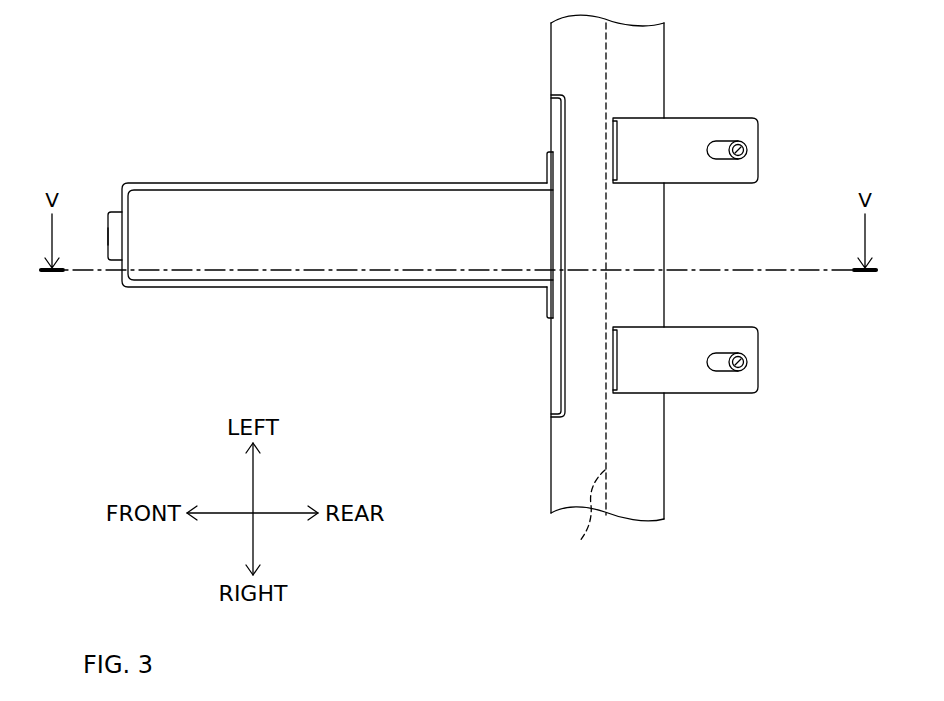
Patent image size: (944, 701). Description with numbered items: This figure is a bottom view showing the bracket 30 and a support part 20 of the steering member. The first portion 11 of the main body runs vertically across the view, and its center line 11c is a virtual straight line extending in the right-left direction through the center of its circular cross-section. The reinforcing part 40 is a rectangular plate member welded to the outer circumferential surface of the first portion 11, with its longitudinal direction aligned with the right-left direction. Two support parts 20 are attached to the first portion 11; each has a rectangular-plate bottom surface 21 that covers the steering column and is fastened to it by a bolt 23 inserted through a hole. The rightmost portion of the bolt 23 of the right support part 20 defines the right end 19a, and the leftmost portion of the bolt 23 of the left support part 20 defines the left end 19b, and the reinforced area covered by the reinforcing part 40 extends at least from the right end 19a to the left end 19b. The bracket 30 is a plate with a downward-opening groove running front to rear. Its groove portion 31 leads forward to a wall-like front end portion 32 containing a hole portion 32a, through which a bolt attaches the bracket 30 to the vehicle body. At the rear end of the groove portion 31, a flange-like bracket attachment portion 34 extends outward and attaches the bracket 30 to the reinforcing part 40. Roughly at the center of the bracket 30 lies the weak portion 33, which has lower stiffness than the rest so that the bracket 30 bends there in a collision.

The first portion 11 is at (570, 475).
The center line 11c is at (585, 294).
The right end 19a is at (729, 372).
The left end 19b is at (729, 145).
The support part 20 is at (718, 251).
The bottom surface 21 is at (701, 128).
The bolt 23 is at (747, 150).
The bracket 30 is at (302, 195).
The groove portion 31 is at (253, 190).
The front end portion 32 is at (120, 197).
The hole portion 32a is at (108, 245).
The weak portion 33 is at (332, 183).
The bracket attachment portion 34 is at (547, 162).
The reinforcing part 40 is at (551, 400).